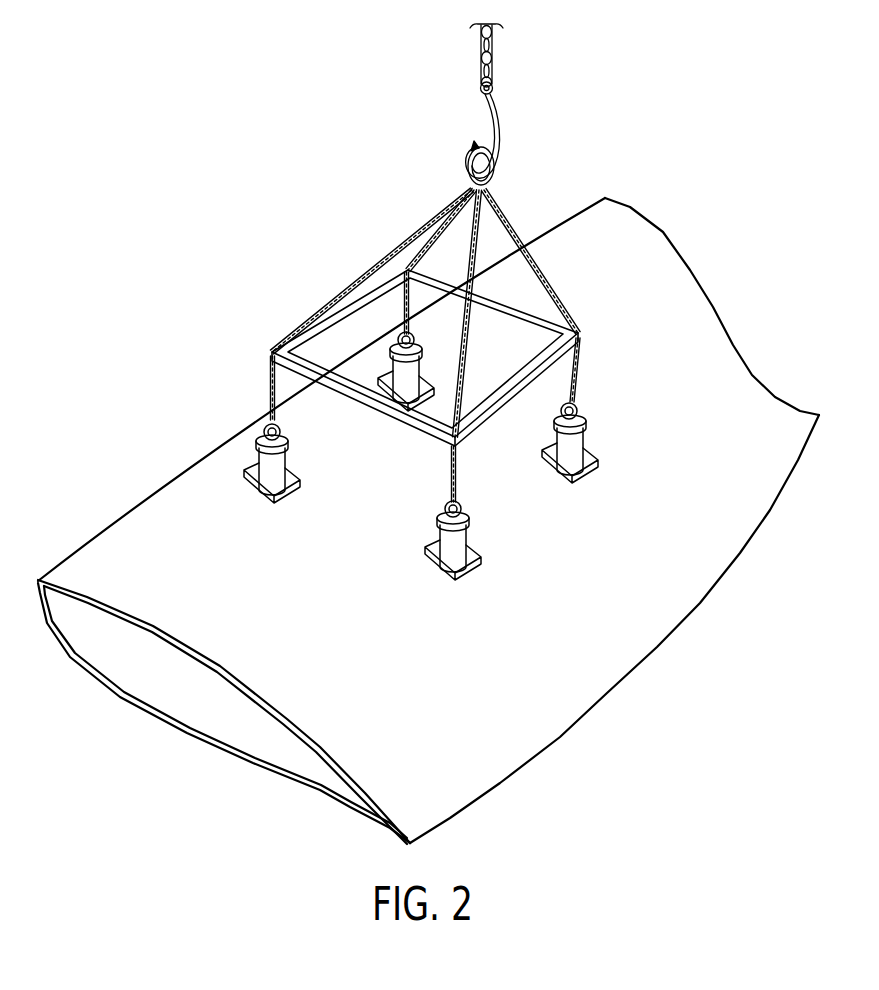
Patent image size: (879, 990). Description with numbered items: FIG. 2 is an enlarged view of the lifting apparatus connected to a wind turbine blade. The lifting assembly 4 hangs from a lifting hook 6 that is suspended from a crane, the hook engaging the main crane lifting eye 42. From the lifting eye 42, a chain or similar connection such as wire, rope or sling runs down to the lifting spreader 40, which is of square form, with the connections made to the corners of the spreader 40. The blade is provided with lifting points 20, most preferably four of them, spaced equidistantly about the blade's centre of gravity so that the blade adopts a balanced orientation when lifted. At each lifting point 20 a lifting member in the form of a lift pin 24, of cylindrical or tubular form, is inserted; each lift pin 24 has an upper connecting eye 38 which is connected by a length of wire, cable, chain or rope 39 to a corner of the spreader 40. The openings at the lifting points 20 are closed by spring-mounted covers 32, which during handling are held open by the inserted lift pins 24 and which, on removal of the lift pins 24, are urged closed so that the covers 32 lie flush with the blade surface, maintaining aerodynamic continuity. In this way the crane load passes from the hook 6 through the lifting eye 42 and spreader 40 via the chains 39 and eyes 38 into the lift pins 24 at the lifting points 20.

The lifting assembly 4 is at (392, 218).
The lifting hook 6 is at (496, 137).
The main crane lifting eye 42 is at (492, 168).
The lifting spreader 40 is at (340, 390).
The chain 39 is at (452, 483).
The upper connecting eye 38 is at (578, 408).
The lift pin 24 is at (592, 427).
The lifting point 20 is at (597, 458).
The spring-mounted cover 32 is at (247, 483).